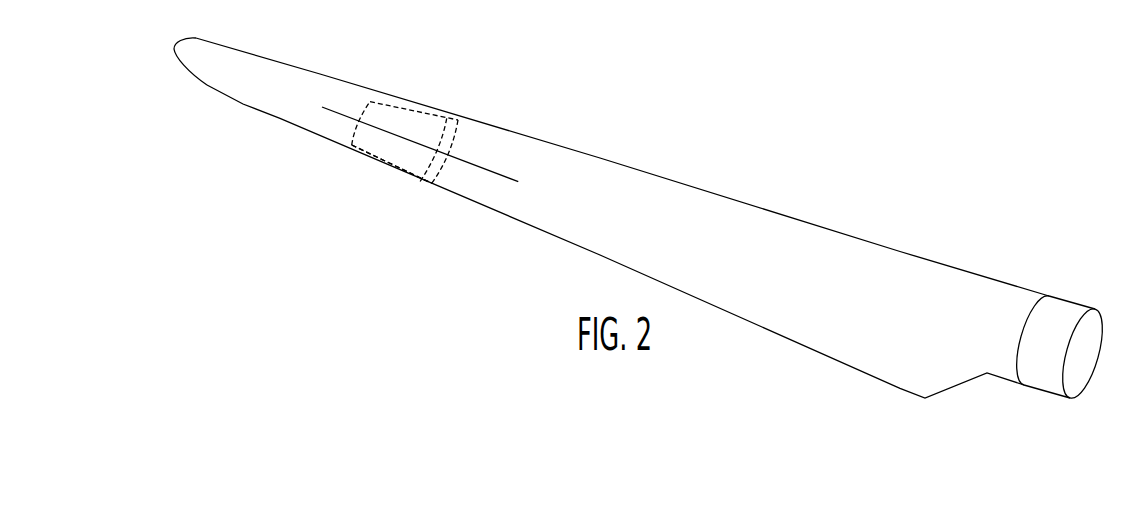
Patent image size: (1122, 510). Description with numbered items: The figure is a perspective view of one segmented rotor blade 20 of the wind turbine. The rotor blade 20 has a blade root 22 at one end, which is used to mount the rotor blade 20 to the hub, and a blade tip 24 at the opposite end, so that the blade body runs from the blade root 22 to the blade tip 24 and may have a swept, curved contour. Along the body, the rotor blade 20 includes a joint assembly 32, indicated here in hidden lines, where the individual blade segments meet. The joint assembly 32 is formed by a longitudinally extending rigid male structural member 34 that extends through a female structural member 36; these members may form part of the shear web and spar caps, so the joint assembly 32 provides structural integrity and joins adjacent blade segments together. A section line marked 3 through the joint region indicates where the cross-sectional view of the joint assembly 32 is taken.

The rotor blade 20 is at (623, 210).
The blade root 22 is at (1068, 318).
The blade tip 24 is at (173, 46).
The joint assembly 32 is at (413, 90).
The male structural member 34 is at (415, 168).
The female structural member 36 is at (437, 172).
The section line 3- 3 is at (322, 107).